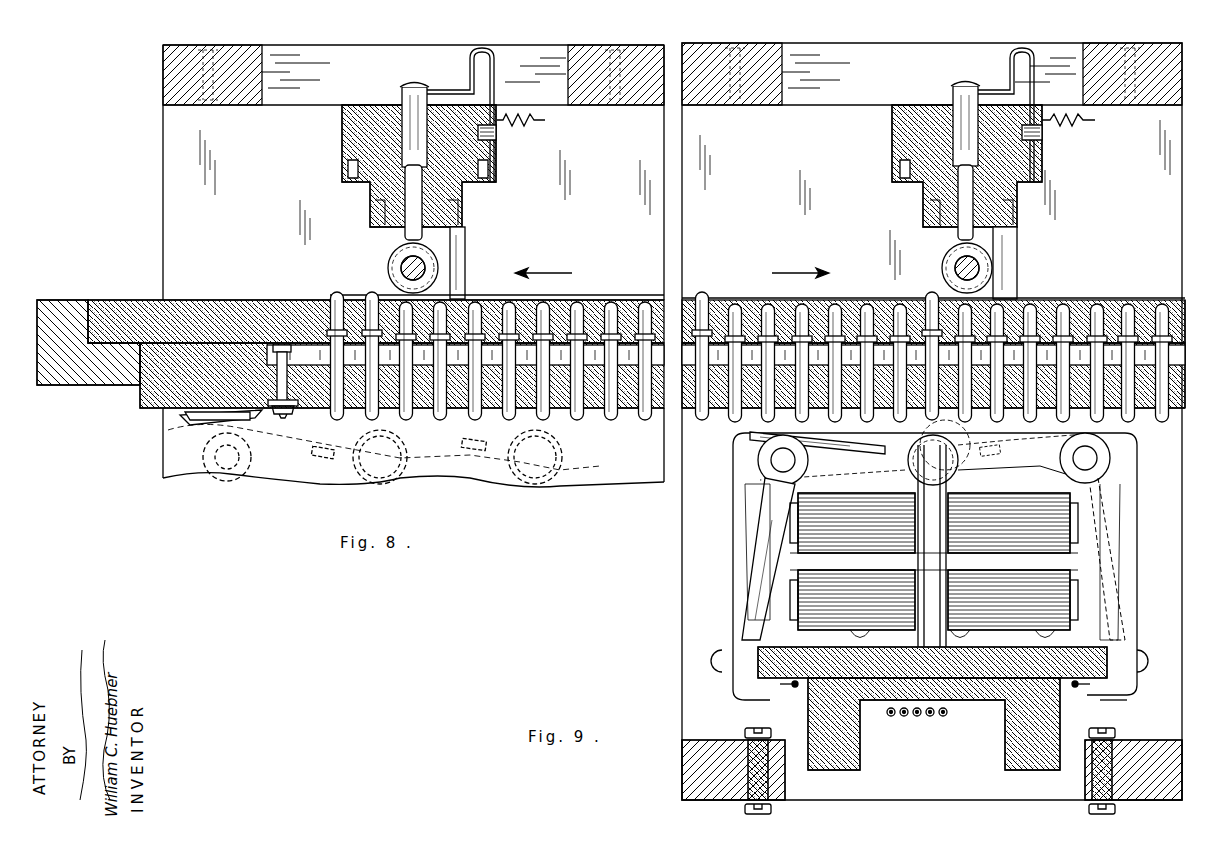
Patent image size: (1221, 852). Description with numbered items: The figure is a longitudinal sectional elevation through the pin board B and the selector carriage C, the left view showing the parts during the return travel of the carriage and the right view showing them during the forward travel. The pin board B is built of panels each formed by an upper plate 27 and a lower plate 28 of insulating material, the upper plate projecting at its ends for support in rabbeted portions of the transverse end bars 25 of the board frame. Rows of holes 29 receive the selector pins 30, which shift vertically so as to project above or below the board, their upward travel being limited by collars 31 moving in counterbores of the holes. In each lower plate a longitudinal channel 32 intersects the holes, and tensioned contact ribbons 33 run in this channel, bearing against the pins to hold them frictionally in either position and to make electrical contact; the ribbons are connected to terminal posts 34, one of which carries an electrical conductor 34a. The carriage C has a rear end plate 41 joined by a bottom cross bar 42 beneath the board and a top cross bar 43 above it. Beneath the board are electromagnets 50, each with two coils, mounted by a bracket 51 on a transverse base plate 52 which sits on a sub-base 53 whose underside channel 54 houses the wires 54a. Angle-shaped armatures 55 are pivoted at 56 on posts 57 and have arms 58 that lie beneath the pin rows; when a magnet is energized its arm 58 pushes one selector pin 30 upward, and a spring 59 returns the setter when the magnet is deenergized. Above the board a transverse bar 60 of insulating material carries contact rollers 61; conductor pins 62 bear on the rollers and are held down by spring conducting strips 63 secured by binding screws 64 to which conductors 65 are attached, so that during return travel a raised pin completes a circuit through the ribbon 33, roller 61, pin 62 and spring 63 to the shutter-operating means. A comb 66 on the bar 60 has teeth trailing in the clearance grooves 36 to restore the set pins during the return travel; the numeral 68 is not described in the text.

In FIG. 8, the transverse end bar 25 is at (70, 298).
In FIG. 8, the upper plate 27 is at (202, 298).
In FIG. 8, the lower plate 28 is at (140, 405).
In FIG. 8, the holes 29 is at (368, 296).
In FIG. 8, the selector pins 30 is at (592, 296).
In FIG. 8, the collars 31 is at (327, 312).
In FIG. 9, the collars 31 is at (932, 357).
In FIG. 8, the longitudinal channel 32 is at (400, 380).
In FIG. 9, the longitudinal channel 32 is at (1186, 330).
In FIG. 8, the contact ribbons 33 is at (320, 375).
In FIG. 9, the contact ribbons 33 is at (1186, 360).
In FIG. 8, the terminal posts 34 is at (286, 420).
In FIG. 8, the electrical conductor 34a is at (183, 424).
In FIG. 8, the clearance grooves 36 is at (645, 296).
In FIG. 9, the clearance grooves 36 is at (1072, 298).
In FIG. 8, the rear end plate 41 is at (163, 268).
In FIG. 9, the rear end plate 41 is at (684, 232).
In FIG. 9, the bottom cross bar 42 is at (682, 776).
In FIG. 8, the top cross bar 43 is at (222, 105).
In FIG. 9, the top cross bar 43 is at (764, 105).
In FIG. 9, the electromagnets 50 is at (1035, 550).
In FIG. 9, the bracket 51 is at (925, 560).
In FIG. 9, the base plate 52 is at (760, 680).
In FIG. 9, the sub-base 53 is at (808, 704).
In FIG. 9, the channel 54 is at (862, 735).
In FIG. 9, the electrical conductors 54a is at (938, 718).
In FIG. 9, the magnet armatures 55 is at (760, 560).
In FIG. 9, the pivot 56 is at (1092, 536).
In FIG. 9, the posts 57 is at (742, 544).
In FIG. 9, the arms 58 is at (908, 445).
In FIG. 9, the spring 59 is at (820, 440).
In FIG. 8, the transverse bar 60 is at (342, 146).
In FIG. 9, the transverse bar 60 is at (892, 140).
In FIG. 8, the contact elements 61 is at (389, 262).
In FIG. 9, the contact elements 61 is at (944, 253).
In FIG. 8, the conductor pins 62 is at (408, 232).
In FIG. 9, the conductor pins 62 is at (953, 95).
In FIG. 8, the spring conducting strip 63 is at (468, 76).
In FIG. 9, the spring conducting strip 63 is at (1000, 78).
In FIG. 8, the binding screw 64 is at (498, 136).
In FIG. 9, the binding screw 64 is at (1044, 136).
In FIG. 8, the conductor 65 is at (532, 120).
In FIG. 9, the conductor 65 is at (1078, 121).
In FIG. 8, the comb 66 is at (466, 257).
In FIG. 9, the comb 66 is at (1018, 232).
In FIG. 9, the spring anchor 68 is at (1102, 137).
In FIG. 8, the pin board B is at (88, 387).
In FIG. 8, the selector carriage C is at (682, 510).